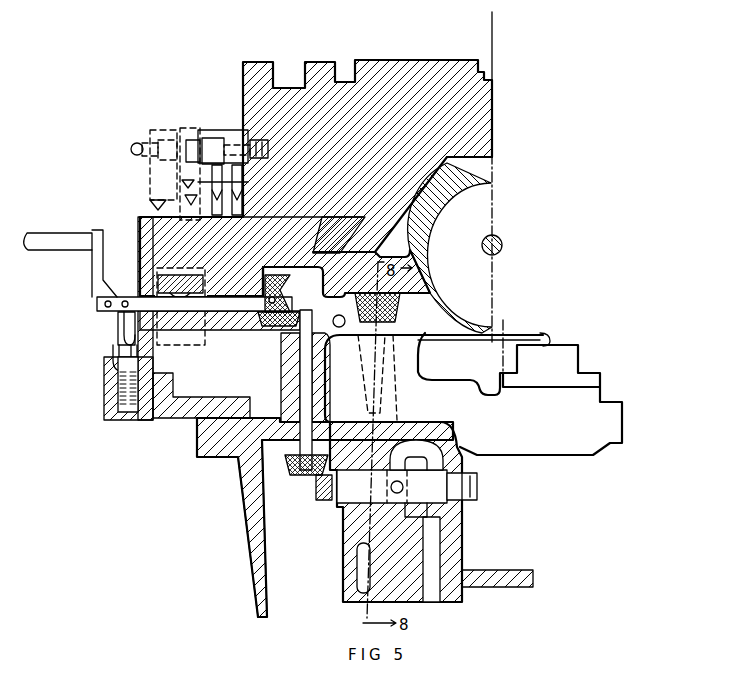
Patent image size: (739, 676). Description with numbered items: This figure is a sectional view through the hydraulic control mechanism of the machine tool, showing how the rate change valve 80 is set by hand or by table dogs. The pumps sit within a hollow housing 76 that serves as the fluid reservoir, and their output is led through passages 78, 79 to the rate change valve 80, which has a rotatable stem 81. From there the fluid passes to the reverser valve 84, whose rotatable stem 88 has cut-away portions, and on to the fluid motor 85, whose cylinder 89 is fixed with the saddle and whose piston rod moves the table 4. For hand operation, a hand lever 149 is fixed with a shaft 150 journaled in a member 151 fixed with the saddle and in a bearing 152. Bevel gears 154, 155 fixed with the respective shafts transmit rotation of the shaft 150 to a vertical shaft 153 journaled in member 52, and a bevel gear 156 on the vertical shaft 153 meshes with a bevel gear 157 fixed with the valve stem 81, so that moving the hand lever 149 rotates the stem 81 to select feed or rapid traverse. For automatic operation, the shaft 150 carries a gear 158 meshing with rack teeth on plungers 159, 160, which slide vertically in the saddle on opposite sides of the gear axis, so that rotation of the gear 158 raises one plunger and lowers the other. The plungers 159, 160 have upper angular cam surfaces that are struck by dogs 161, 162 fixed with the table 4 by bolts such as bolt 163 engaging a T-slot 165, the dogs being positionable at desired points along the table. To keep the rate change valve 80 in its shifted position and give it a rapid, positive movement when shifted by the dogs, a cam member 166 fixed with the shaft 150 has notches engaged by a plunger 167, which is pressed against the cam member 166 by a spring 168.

The table 4 is at (493, 93).
The fluid motor 85 is at (480, 195).
The cylinder 89 is at (462, 207).
The T-slot 165 is at (262, 142).
The dog 161 is at (156, 129).
The dog 162 is at (192, 128).
The bolt 163 is at (130, 152).
The plunger 159 is at (148, 207).
The member 151 is at (140, 250).
The hand lever 149 is at (42, 255).
The bevel gear 154 is at (285, 290).
The cam member 166 is at (118, 327).
The plunger 167 is at (113, 355).
The spring 168 is at (108, 392).
The shaft 150 is at (255, 312).
The bevel gear 155 is at (280, 327).
The bearing 152 is at (200, 345).
The plunger 160 is at (186, 350).
The gear 158 is at (173, 390).
The vertical shaft 153 is at (302, 362).
The reverser valve 84 is at (416, 376).
The rotatable stem 88 is at (378, 382).
The member 52 is at (197, 428).
The hollow housing 76 is at (245, 487).
The bevel gear 156 is at (300, 478).
The bevel gear 157 is at (330, 503).
The passage 78 is at (358, 572).
The rotatable stem 81 is at (407, 486).
The rate change valve 80 is at (420, 502).
The passage 79 is at (432, 535).